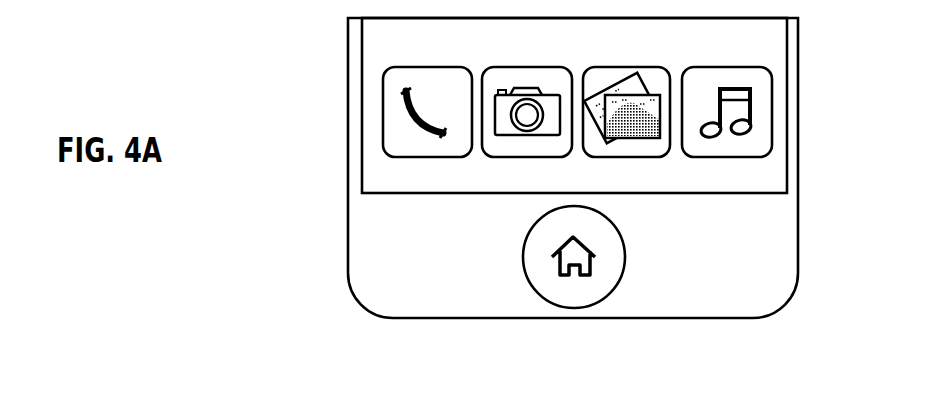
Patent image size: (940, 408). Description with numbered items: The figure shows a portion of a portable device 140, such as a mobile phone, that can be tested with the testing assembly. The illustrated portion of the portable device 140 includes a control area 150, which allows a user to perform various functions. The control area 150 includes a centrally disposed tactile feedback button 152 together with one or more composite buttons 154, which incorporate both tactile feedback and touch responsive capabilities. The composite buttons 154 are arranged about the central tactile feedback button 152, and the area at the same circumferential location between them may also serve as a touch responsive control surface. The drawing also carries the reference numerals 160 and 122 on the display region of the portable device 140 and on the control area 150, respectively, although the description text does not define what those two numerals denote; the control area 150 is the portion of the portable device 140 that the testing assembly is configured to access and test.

The portable device 140 is at (775, 240).
The display screen with graphical user interface 160 is at (387, 50).
The control area 150 is at (569, 288).
The button 122 is at (548, 280).
The tactile feedback button 152 is at (591, 263).
The composite buttons 154 is at (619, 252).